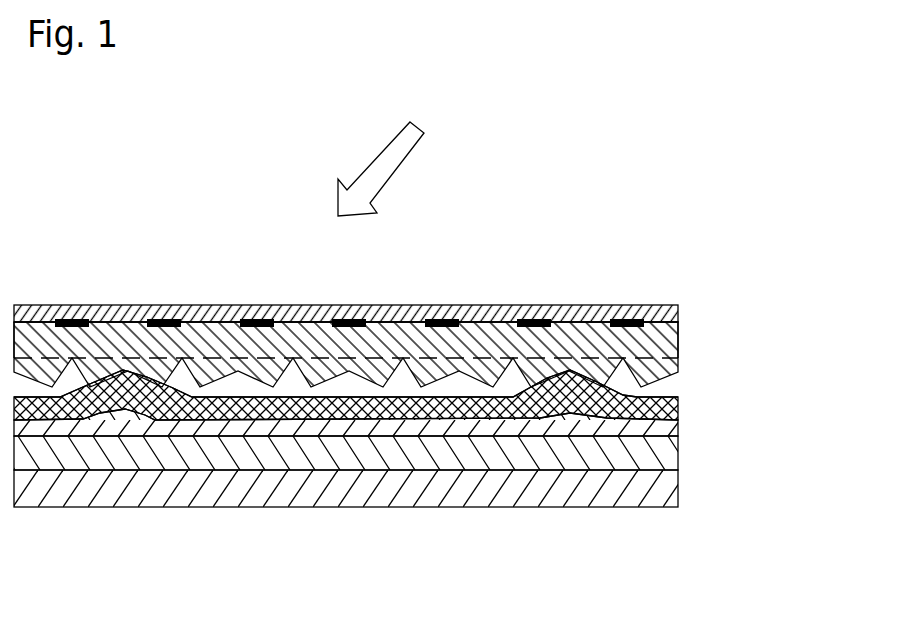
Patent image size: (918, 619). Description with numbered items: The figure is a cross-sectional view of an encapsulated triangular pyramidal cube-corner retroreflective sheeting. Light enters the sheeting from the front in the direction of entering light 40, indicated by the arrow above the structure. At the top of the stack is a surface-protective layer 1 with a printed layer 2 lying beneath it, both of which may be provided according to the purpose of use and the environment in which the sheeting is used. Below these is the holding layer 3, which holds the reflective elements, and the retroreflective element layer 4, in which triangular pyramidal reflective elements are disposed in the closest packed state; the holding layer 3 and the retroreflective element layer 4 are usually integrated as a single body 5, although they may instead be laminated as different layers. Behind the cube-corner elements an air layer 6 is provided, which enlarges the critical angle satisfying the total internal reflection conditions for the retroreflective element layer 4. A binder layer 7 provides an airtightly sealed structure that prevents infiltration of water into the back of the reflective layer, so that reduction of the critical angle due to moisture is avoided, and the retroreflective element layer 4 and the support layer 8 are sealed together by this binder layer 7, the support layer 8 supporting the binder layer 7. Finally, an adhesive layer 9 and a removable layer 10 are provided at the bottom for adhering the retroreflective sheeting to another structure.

The surface-protective layer 1 is at (628, 319).
The printed layer 2 is at (643, 322).
The holding layer 3 is at (643, 346).
The retroreflective element layer 4 is at (640, 373).
The integrated layer 5 is at (447, 356).
The air layer 6 is at (457, 387).
The binder layer 7 is at (457, 410).
The support layer 8 is at (457, 428).
The adhesive layer 9 is at (457, 455).
The removable layer 10 is at (457, 487).
The direction of entering light 40 is at (398, 158).